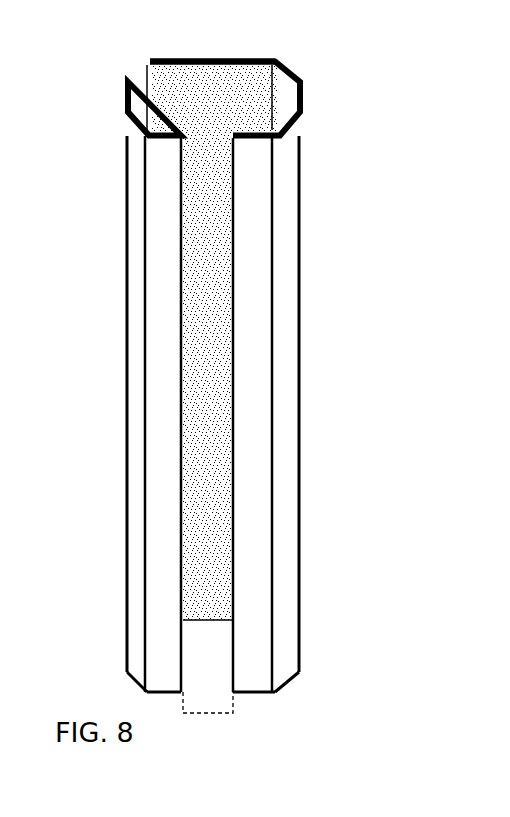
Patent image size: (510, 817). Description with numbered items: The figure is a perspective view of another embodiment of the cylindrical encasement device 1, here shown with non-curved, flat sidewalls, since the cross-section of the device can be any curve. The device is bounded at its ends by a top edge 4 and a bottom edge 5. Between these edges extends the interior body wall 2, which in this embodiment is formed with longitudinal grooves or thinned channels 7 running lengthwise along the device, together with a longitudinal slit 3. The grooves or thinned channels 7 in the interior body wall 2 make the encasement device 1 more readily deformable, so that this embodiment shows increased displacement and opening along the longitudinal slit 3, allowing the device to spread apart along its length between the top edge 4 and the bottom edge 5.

The cylindrical encasement device 1 is at (294, 374).
The interior body wall 2 is at (228, 119).
The longitudinal slit 3 is at (205, 713).
The top edge 4 is at (303, 95).
The bottom edge 5 is at (130, 683).
The longitudinal grooves or thinned channels 7 is at (148, 58).